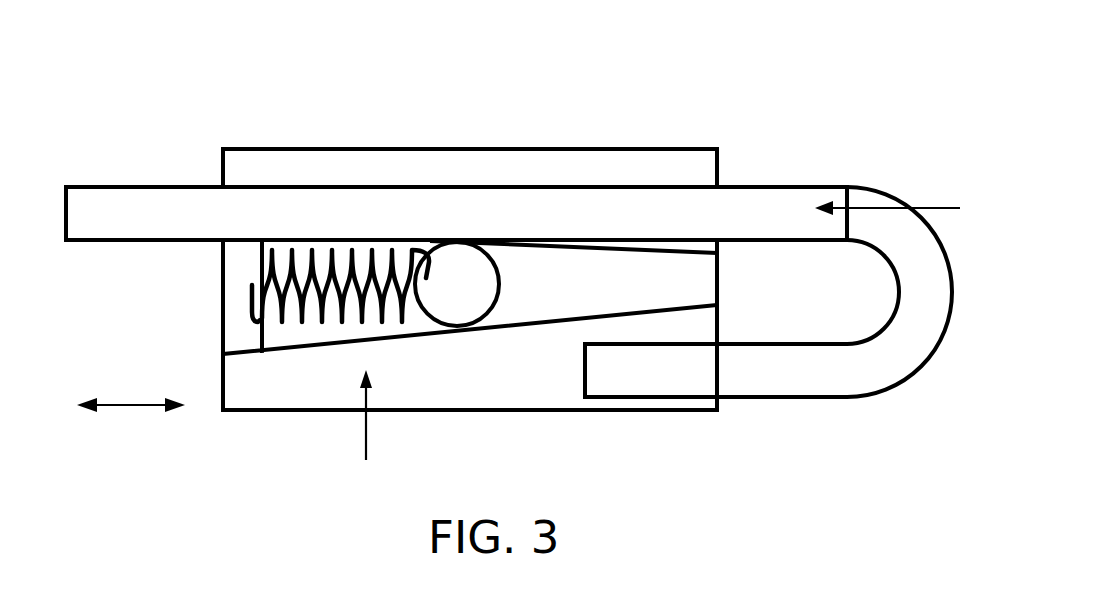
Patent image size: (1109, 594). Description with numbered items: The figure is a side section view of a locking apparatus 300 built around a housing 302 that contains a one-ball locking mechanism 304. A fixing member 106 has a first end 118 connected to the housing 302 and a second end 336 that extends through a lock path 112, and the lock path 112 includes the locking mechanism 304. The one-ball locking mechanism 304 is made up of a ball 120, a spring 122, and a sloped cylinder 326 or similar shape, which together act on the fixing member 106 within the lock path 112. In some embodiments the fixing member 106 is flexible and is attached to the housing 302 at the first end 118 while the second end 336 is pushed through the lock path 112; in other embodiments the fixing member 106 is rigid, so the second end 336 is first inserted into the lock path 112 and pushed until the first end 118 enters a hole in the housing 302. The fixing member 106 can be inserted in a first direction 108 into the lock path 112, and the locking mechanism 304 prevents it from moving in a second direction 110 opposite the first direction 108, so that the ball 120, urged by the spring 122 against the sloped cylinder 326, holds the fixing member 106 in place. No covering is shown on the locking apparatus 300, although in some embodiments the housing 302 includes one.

The locking apparatus 300 is at (192, 124).
The housing 302 is at (457, 172).
The second end 336 is at (157, 208).
The fixing member 106 is at (402, 222).
The first end 118 is at (635, 368).
The sloped cylinder 326 is at (527, 297).
The ball 120 is at (465, 290).
The spring 122 is at (340, 303).
The one-ball locking mechanism 304 is at (366, 428).
The first direction 108 is at (120, 390).
The second direction 110 is at (176, 390).
The lock path 112 is at (888, 187).